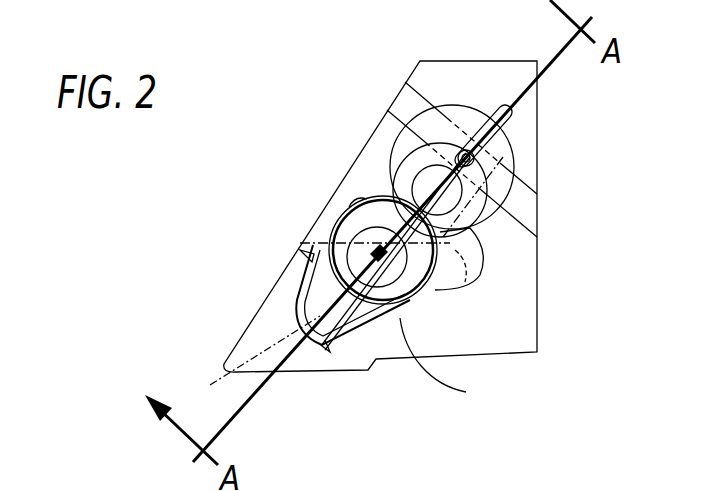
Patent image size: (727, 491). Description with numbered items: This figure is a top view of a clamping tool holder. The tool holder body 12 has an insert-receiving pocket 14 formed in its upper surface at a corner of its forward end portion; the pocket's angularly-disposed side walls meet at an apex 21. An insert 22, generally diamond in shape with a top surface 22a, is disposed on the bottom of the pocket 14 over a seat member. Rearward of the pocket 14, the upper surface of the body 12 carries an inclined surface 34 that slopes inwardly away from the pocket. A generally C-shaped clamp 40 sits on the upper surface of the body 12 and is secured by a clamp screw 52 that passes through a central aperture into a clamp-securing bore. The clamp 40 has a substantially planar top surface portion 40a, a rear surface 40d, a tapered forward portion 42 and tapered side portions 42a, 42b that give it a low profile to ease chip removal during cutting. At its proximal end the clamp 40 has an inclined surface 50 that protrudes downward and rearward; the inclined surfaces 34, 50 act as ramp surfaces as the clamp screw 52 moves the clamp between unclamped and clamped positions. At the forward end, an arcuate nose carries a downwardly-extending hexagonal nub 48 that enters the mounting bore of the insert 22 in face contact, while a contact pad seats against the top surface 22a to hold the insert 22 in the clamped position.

The tool holder body 12 is at (361, 156).
The insert-receiving pocket 14 is at (446, 363).
The apex 21 is at (462, 255).
The insert 22 is at (240, 316).
The top surface 22a is at (240, 355).
The inclined surface 34 is at (518, 229).
The clamp 40 is at (294, 276).
The top surface portion 40a is at (318, 235).
The rear surface 40d is at (462, 123).
The tapered forward portion 42 is at (297, 295).
The tapered side portion 42a is at (290, 315).
The tapered side portion 42b is at (377, 310).
The nub 48 is at (323, 350).
The inclined surface 50 is at (518, 146).
The clamp screw 52 is at (347, 202).